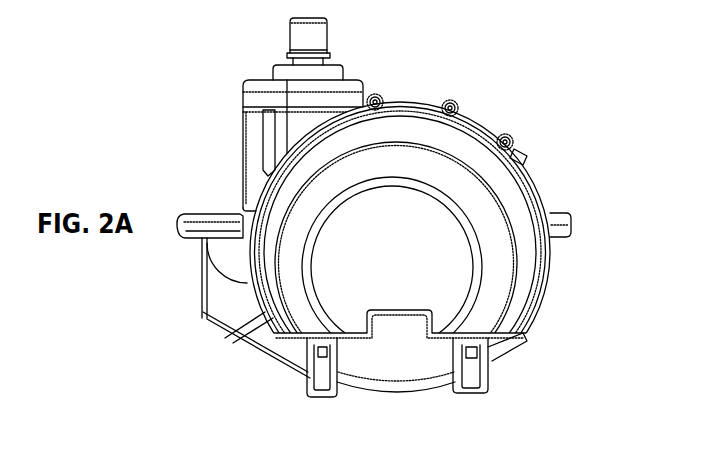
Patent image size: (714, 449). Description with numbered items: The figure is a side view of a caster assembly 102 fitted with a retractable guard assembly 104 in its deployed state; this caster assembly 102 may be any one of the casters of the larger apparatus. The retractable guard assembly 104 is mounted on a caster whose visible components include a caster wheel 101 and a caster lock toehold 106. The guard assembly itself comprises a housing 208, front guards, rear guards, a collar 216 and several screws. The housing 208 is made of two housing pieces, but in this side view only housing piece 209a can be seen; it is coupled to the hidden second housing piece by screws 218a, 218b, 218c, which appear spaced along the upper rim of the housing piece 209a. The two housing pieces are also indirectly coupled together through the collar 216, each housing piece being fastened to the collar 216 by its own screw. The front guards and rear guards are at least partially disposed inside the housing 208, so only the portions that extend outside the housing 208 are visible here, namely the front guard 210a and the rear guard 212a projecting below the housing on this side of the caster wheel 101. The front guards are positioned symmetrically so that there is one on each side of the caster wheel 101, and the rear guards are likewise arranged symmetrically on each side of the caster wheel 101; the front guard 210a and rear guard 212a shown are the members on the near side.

The caster wheel 101 is at (398, 403).
The caster assembly 102 is at (575, 60).
The retractable guard assembly 104 is at (226, 66).
The caster lock toehold 106 is at (212, 216).
The housing 208 is at (449, 76).
The housing piece 209a is at (535, 183).
The front guard 210a is at (305, 383).
The rear guard 212a is at (492, 378).
The collar 216 is at (243, 160).
The screw 218a is at (375, 93).
The screw 218b is at (455, 99).
The screw 218c is at (512, 134).